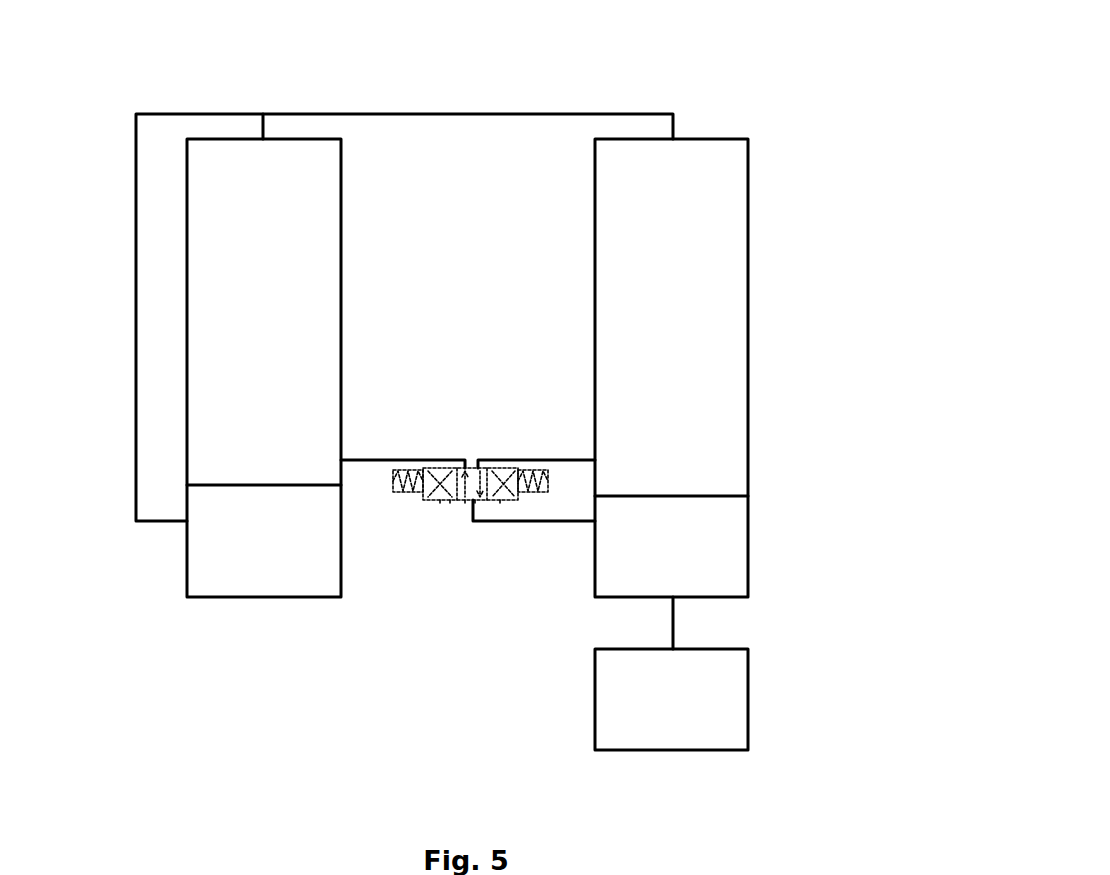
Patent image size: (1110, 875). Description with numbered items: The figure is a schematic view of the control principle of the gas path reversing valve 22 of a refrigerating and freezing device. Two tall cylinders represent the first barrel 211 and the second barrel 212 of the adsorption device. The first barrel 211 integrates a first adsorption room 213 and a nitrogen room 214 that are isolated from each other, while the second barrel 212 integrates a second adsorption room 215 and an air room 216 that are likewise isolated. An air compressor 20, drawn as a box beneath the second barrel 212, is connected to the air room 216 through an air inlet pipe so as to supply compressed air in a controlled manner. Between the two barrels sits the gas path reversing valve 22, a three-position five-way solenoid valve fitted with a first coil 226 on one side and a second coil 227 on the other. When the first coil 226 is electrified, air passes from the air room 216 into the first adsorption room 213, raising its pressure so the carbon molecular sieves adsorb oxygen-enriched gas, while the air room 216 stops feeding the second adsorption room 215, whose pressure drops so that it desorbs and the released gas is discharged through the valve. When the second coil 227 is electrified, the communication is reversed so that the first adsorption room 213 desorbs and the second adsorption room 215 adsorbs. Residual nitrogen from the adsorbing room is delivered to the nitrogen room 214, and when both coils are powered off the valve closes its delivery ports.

The air compressor 20 is at (697, 700).
The gas path reversing valve 22 is at (451, 549).
The first barrel 211 is at (178, 363).
The second barrel 212 is at (707, 365).
The first adsorption room 213 is at (255, 242).
The nitrogen room 214 is at (203, 562).
The second adsorption room 215 is at (713, 242).
The air room 216 is at (723, 530).
The first coil 226 is at (418, 478).
The second coil 227 is at (542, 476).